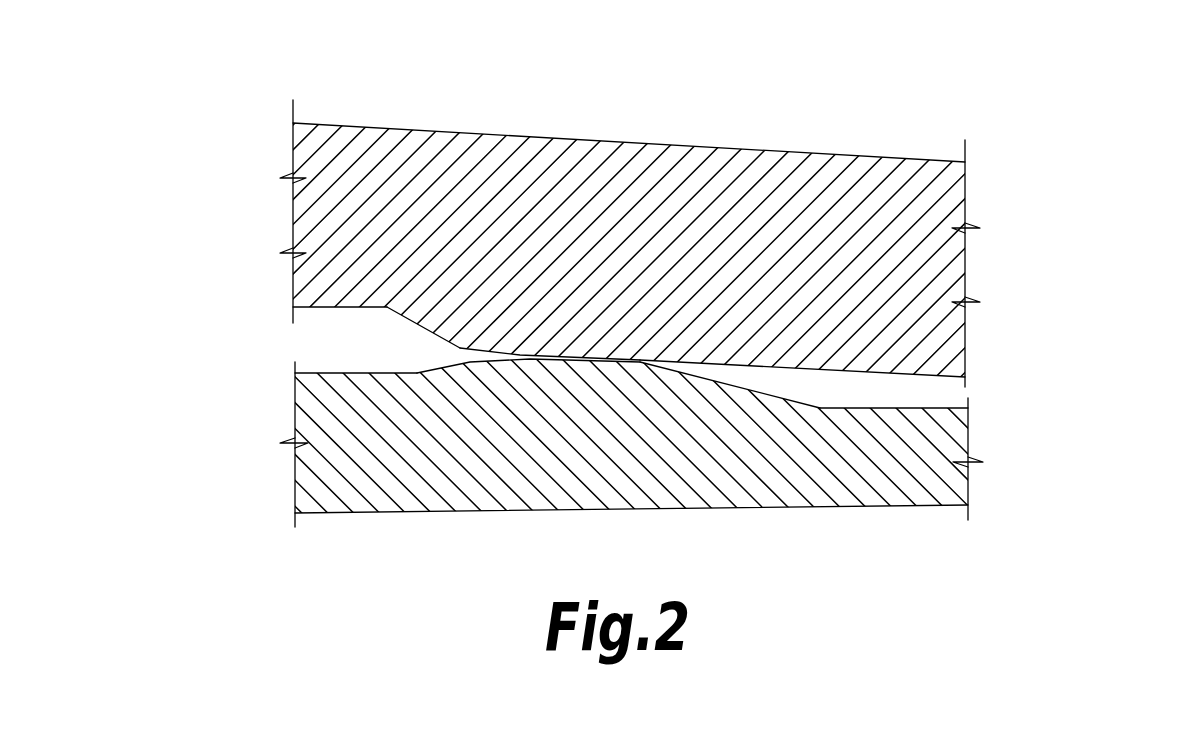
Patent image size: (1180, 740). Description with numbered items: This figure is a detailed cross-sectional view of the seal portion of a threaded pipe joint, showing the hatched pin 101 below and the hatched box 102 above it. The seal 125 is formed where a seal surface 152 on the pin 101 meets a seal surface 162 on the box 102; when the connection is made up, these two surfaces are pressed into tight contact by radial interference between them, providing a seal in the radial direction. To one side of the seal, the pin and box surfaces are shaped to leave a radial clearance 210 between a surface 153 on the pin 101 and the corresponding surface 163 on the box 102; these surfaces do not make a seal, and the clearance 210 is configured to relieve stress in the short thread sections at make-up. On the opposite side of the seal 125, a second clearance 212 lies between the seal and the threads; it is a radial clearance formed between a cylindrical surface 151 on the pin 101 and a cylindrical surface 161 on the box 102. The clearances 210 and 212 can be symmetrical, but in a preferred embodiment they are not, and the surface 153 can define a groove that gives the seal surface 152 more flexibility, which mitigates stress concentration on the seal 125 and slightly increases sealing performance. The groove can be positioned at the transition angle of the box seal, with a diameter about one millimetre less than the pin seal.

The pin 101 is at (357, 500).
The box 102 is at (819, 168).
The seal 125 is at (602, 360).
The cylindrical surface 151 is at (893, 410).
The seal surface 152 is at (637, 360).
The surface 153 is at (338, 372).
The cylindrical surface 161 is at (885, 367).
The seal surface 162 is at (580, 357).
The surface 163 is at (330, 305).
The radial clearance 210 is at (368, 330).
The second clearance 212 is at (866, 392).